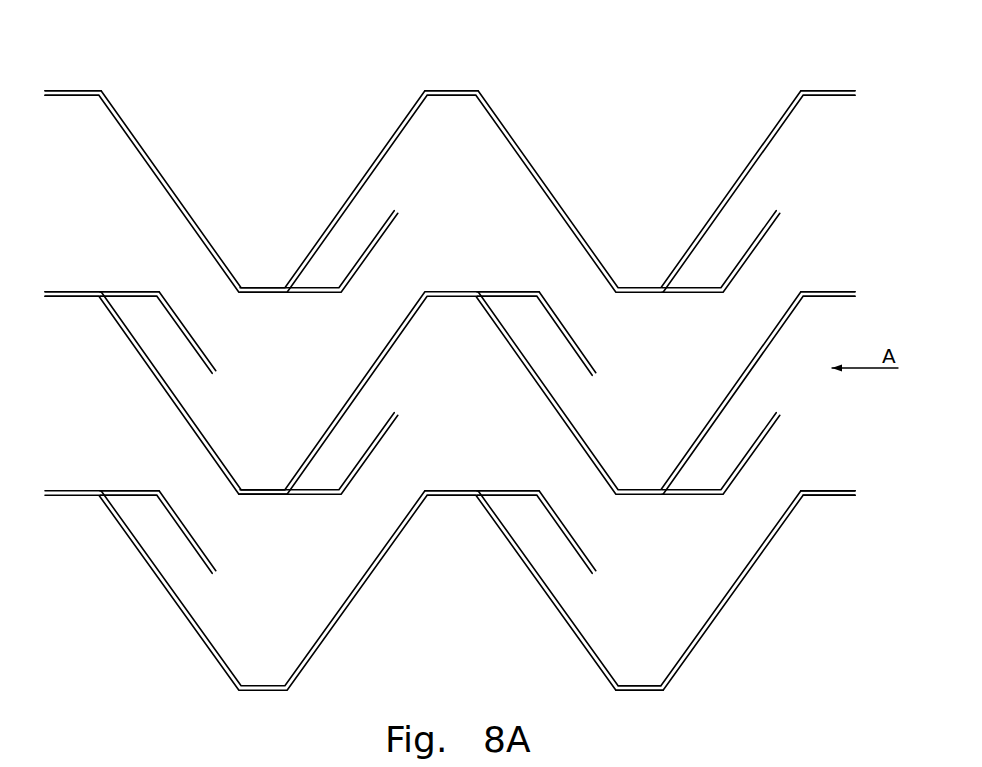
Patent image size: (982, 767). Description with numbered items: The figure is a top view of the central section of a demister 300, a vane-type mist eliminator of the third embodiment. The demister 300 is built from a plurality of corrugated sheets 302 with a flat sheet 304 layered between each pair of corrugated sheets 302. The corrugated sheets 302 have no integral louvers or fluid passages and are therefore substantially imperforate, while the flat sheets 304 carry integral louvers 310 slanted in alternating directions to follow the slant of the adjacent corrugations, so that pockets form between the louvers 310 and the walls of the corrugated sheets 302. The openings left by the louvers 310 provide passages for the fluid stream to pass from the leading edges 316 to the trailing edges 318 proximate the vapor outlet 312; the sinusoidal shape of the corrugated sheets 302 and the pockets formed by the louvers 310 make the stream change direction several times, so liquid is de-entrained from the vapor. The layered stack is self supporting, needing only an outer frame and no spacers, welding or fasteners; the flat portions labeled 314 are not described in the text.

The demister 300 is at (468, 371).
The corrugated sheet 302 is at (147, 162).
The flat sheet 304 is at (142, 288).
The louver 310 is at (398, 220).
The vapor outlet 312 is at (44, 168).
The flat portion 314 is at (453, 98).
The leading edge 316 is at (857, 96).
The trailing edge 318 is at (45, 297).